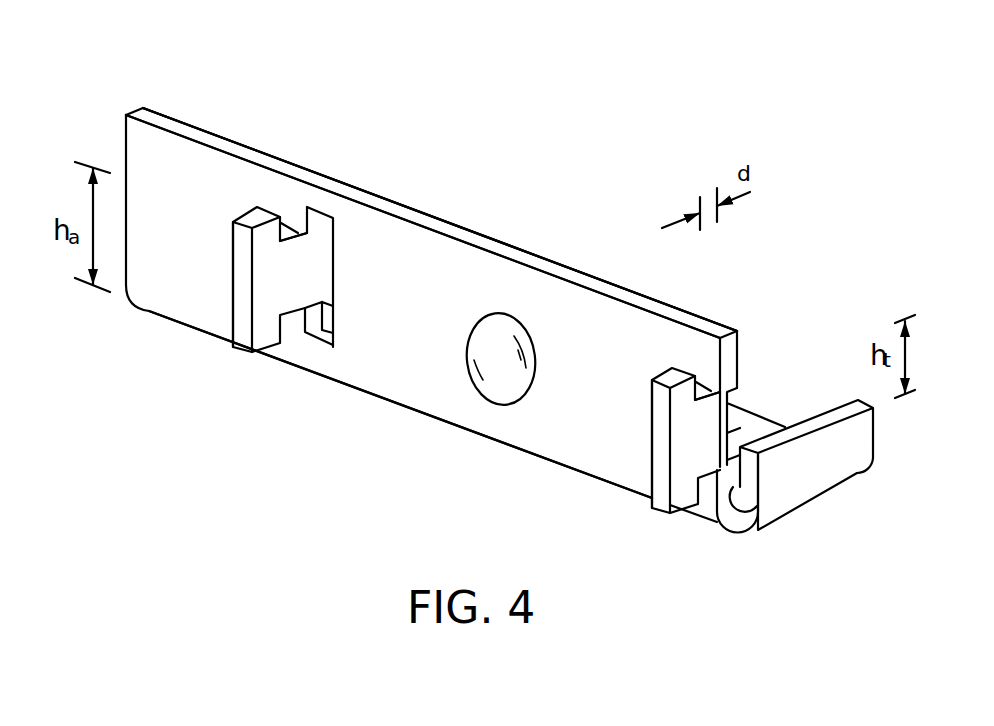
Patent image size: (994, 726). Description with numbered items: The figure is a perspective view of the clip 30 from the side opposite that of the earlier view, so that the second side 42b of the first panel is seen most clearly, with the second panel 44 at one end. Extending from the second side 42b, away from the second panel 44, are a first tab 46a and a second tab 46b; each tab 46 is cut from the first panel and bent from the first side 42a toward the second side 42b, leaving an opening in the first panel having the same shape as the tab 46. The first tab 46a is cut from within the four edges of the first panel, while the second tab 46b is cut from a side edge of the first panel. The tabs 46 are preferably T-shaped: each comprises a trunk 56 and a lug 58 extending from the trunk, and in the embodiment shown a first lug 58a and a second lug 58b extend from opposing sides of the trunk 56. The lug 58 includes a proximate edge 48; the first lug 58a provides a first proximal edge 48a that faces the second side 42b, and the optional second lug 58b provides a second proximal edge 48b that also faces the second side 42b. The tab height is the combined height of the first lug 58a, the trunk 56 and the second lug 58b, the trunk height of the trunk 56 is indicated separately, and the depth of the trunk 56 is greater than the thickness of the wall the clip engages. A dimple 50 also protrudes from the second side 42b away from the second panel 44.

The clip 30 is at (110, 63).
The first side 42a is at (505, 236).
The second side 42b is at (438, 380).
The second panel 44 is at (757, 418).
The tab 46 is at (427, 213).
The first tab 46a is at (238, 282).
The second tab 46b is at (658, 438).
The proximate edge 48 is at (340, 387).
The first proximal edge 48a is at (285, 233).
The second proximal edge 48b is at (285, 330).
The dimple 50 is at (502, 372).
The trunk 56 is at (292, 265).
The lug 58 is at (513, 334).
The first lug 58a is at (265, 235).
The second lug 58b is at (257, 335).